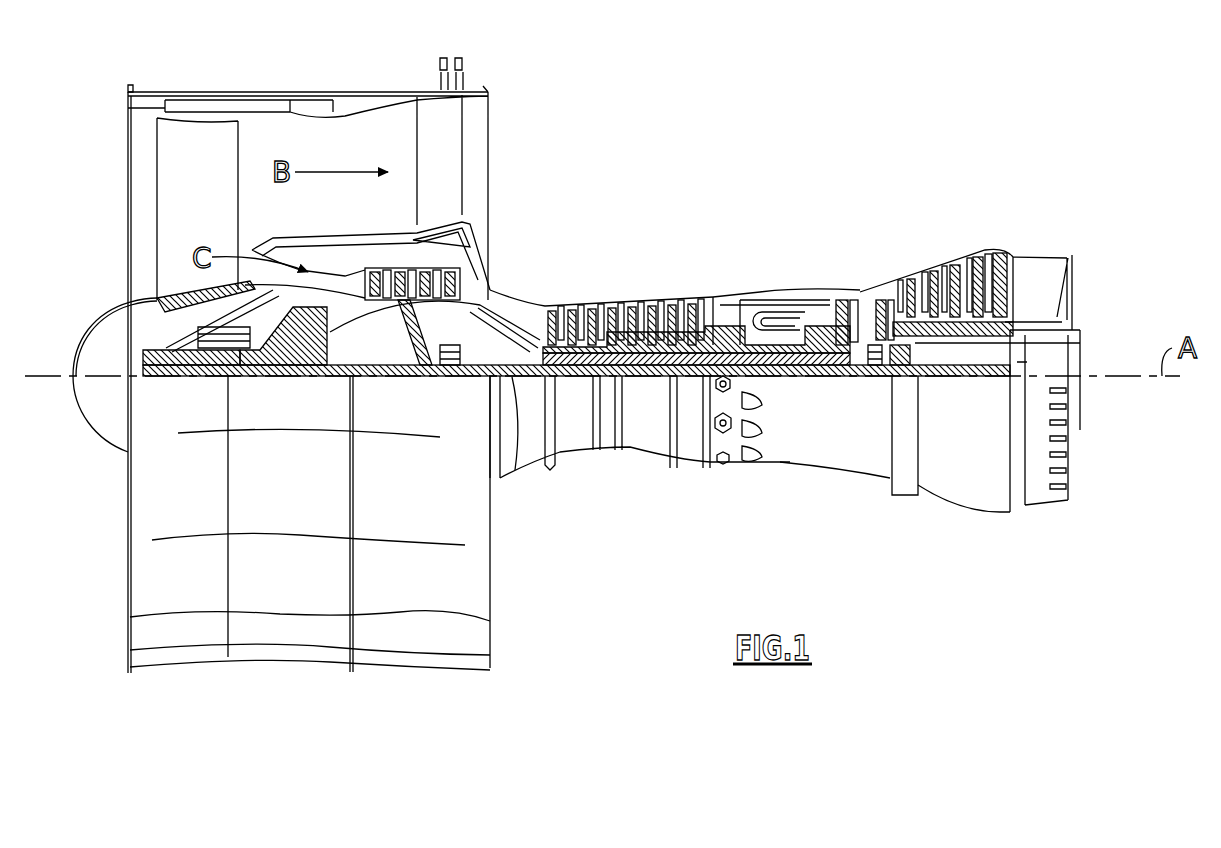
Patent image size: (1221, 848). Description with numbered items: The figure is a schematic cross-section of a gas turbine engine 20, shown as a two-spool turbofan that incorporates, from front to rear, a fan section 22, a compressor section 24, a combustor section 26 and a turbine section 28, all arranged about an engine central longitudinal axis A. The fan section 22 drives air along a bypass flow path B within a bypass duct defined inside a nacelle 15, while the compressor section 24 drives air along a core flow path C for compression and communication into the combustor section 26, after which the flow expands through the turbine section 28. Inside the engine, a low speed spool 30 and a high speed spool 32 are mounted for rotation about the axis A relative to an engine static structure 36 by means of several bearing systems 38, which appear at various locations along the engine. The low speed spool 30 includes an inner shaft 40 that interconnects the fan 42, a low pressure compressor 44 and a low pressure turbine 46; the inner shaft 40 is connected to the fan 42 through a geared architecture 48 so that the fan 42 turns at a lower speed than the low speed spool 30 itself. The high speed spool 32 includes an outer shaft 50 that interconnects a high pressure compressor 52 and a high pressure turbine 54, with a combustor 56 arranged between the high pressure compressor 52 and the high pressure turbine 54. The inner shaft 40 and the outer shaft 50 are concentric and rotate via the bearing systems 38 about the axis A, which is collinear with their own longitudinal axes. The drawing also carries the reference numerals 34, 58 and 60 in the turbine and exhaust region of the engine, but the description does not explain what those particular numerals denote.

The nacelle 15 is at (310, 103).
The gas turbine engine 20 is at (768, 145).
The fan section 22 is at (238, 85).
The compressor section 24 is at (542, 283).
The combustor section 26 is at (763, 270).
The turbine section 28 is at (912, 237).
The low speed spool 30 is at (652, 458).
The high speed spool 32 is at (688, 325).
The exhaust case 34 is at (995, 333).
The engine static structure 36 is at (690, 468).
The bearing systems 38 is at (238, 378).
The inner shaft 40 is at (516, 470).
The fan 42 is at (212, 222).
The low pressure compressor 44 is at (422, 275).
The low pressure turbine 46 is at (946, 272).
The geared architecture 48 is at (317, 378).
The outer shaft 50 is at (772, 382).
The high pressure compressor 52 is at (625, 340).
The high pressure turbine 54 is at (830, 300).
The combustor 56 is at (765, 318).
The mid-turbine frame 58 is at (875, 285).
The airfoils 60 is at (890, 340).